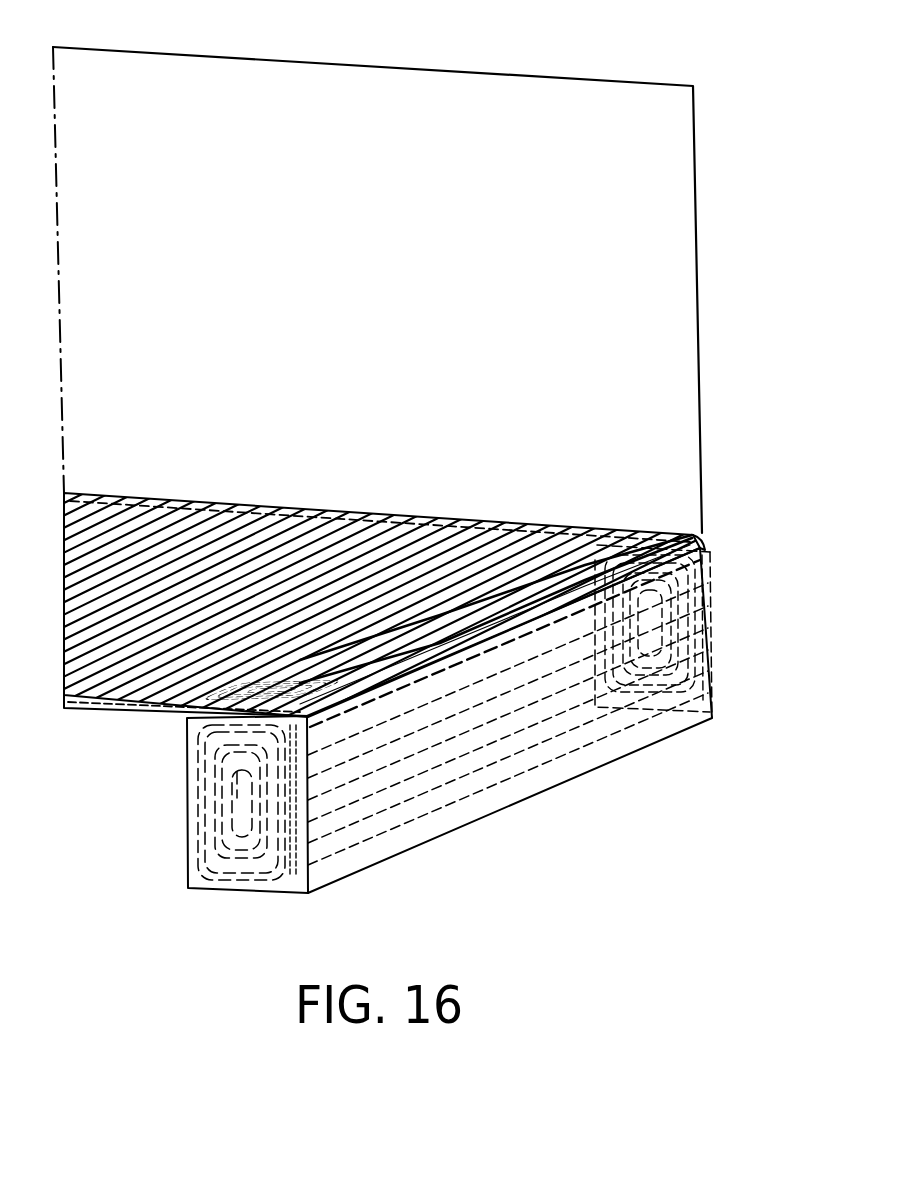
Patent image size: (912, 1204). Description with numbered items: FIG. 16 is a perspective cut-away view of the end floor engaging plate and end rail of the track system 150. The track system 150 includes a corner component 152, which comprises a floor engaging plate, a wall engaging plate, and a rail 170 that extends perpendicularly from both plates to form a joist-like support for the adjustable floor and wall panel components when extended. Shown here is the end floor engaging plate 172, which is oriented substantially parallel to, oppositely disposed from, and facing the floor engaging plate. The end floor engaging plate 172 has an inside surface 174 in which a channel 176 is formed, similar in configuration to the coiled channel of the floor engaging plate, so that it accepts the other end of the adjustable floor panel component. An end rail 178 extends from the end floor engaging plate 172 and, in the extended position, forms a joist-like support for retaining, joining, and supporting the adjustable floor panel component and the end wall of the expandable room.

The track system 150 is at (460, 685).
The corner component 152 is at (182, 740).
The rail 170 is at (105, 712).
The end floor engaging plate 172 is at (717, 562).
The inside surface 174 is at (700, 699).
The channel 176 is at (697, 635).
The end rail 178 is at (420, 515).